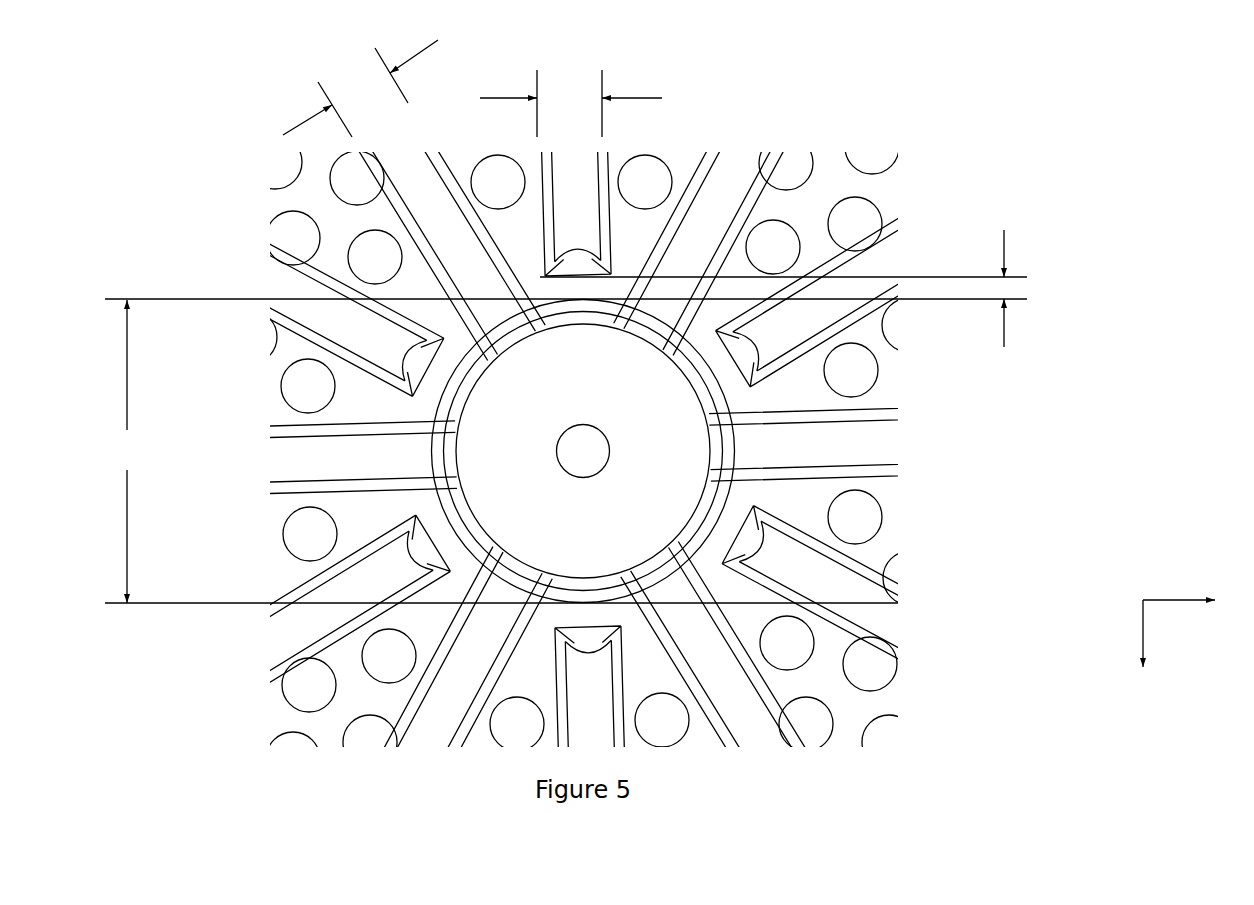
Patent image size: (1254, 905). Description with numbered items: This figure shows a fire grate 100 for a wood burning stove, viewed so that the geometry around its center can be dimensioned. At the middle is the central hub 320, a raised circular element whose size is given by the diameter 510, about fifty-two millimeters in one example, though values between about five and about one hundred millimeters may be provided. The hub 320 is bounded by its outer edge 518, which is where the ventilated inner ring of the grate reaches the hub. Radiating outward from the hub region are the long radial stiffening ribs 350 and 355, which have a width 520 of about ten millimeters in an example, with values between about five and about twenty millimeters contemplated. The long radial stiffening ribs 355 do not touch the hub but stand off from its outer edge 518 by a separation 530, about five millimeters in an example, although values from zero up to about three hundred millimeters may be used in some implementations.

The fire grate 100 is at (150, 173).
The central hub 320 is at (660, 447).
The long radial stiffening ribs 350 is at (783, 98).
The long radial stiffening ribs 355 is at (583, 451).
The diameter 510 is at (566, 451).
The outer edge 518 is at (728, 492).
The width 520 is at (472, 88).
The separation 530 is at (808, 288).